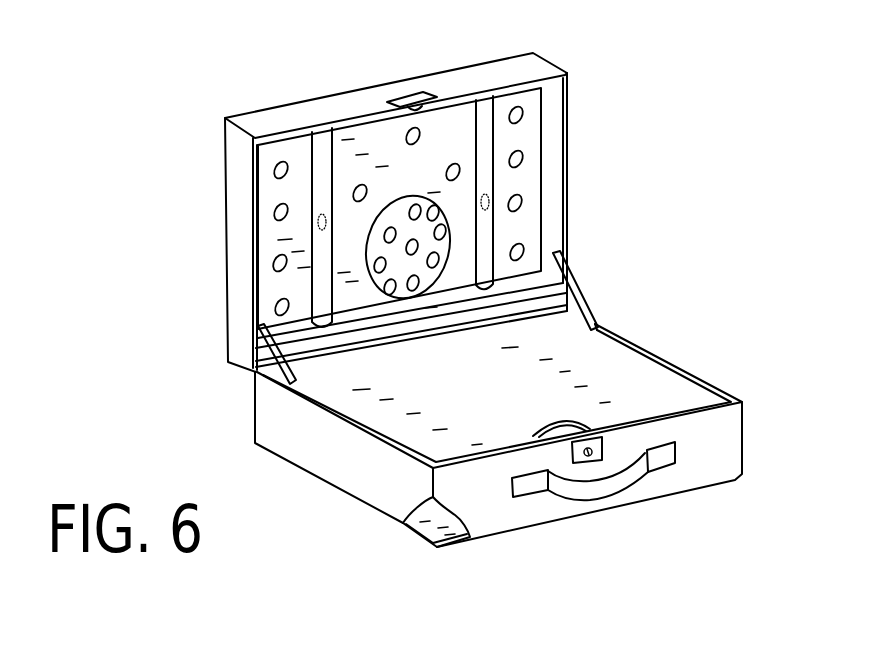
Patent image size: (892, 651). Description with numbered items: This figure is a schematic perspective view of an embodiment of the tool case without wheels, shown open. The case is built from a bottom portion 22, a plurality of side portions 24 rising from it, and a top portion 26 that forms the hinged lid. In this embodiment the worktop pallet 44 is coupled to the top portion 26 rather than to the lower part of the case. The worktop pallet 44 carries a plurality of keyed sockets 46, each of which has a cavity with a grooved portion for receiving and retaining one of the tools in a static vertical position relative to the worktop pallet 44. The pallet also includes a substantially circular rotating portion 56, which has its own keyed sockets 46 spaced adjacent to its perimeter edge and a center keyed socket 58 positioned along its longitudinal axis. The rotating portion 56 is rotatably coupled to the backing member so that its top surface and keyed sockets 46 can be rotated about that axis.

The bottom portion 22 is at (407, 525).
The side portions 24 is at (745, 441).
The top portion 26 is at (308, 100).
The worktop pallet 44 is at (542, 163).
The keyed sockets 46 is at (523, 118).
The rotating portion 56 is at (418, 246).
The center keyed socket 58 is at (447, 224).